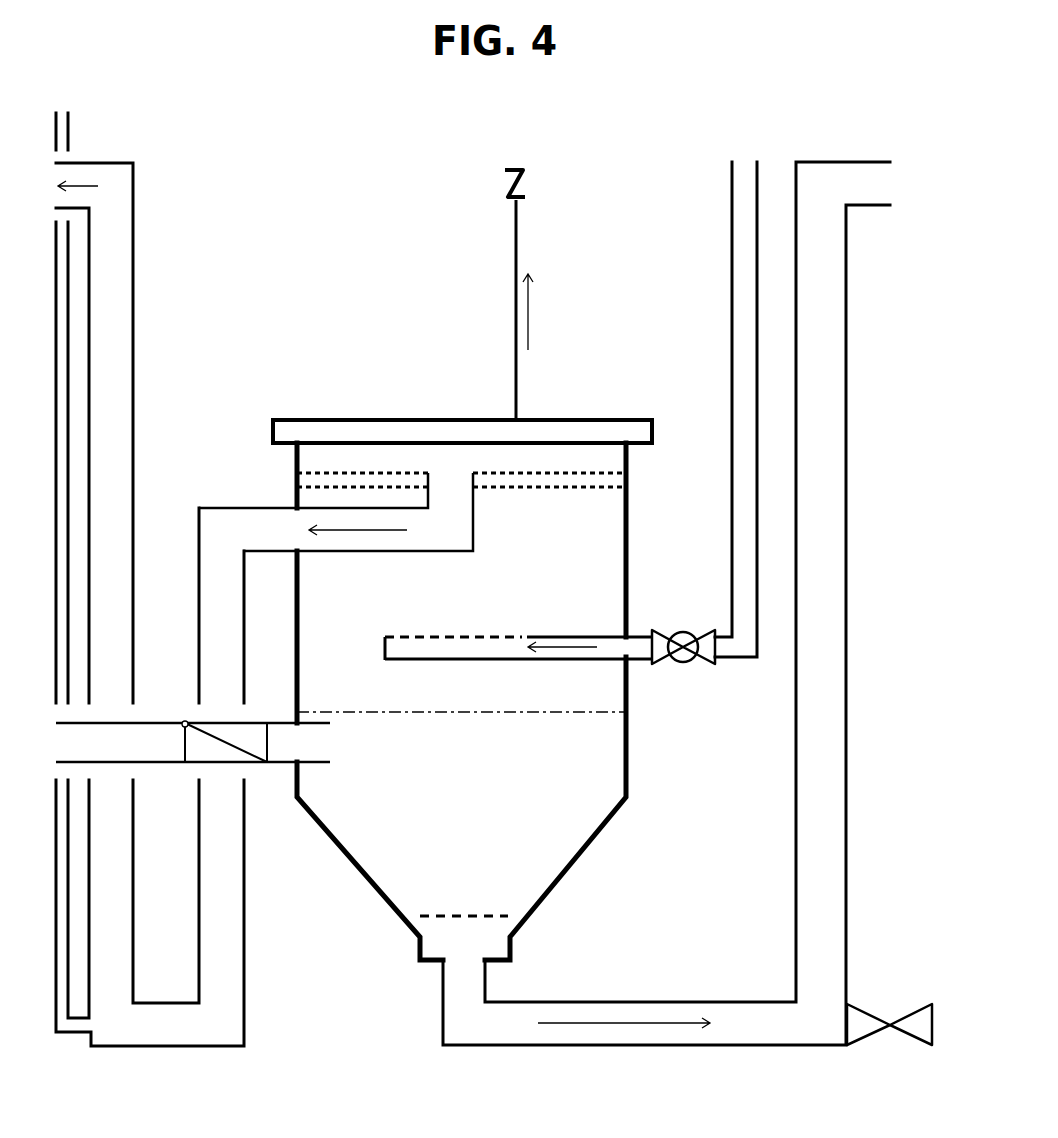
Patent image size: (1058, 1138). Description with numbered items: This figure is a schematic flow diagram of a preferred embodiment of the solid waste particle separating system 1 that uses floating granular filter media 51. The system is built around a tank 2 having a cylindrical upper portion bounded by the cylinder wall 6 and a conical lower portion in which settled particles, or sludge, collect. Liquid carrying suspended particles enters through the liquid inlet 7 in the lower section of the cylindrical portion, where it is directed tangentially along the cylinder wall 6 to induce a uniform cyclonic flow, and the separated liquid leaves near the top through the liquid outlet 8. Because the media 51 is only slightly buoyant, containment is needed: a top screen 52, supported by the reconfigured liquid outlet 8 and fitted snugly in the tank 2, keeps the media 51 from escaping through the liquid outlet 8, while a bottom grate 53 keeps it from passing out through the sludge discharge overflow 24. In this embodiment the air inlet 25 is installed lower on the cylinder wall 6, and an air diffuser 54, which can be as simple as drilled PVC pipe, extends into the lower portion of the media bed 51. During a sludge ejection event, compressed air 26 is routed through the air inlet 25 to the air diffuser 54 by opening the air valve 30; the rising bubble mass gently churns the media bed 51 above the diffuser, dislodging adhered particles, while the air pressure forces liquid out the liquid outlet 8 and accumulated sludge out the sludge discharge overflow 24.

The solid waste particle separating system 1 is at (306, 242).
The tank 2 is at (475, 772).
The cylinder wall 6 is at (615, 559).
The liquid inlet 7 is at (351, 748).
The liquid outlet 8 is at (460, 491).
The sludge discharge overflow 24 is at (880, 188).
The air inlet 25 is at (622, 638).
The compressed air 26 is at (721, 198).
The air valve 30 is at (686, 622).
The floating granular filter media 51 is at (533, 589).
The top screen 52 is at (541, 486).
The bottom grate 53 is at (464, 906).
The air diffuser 54 is at (478, 628).